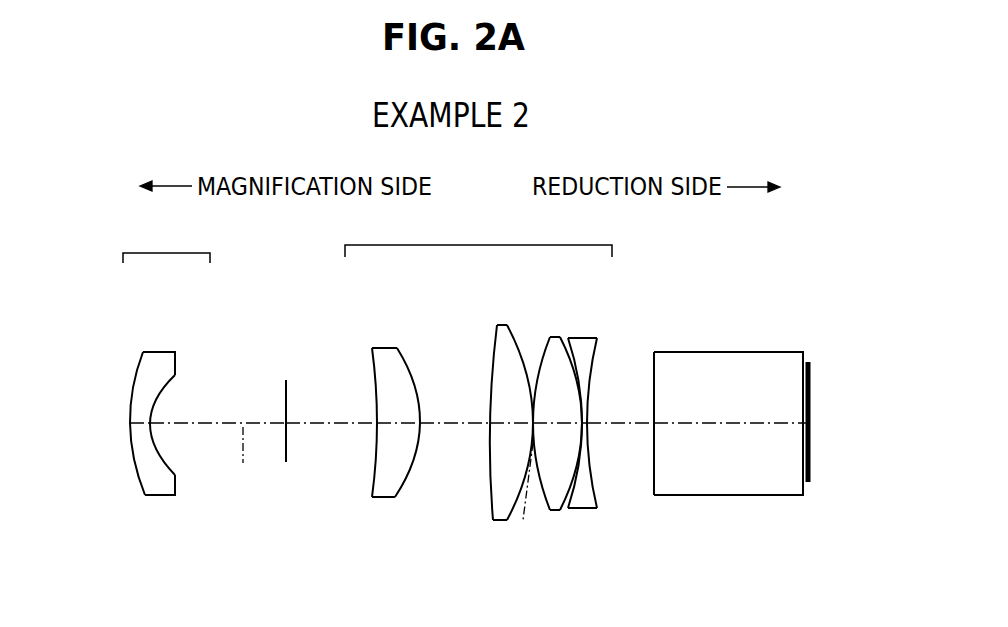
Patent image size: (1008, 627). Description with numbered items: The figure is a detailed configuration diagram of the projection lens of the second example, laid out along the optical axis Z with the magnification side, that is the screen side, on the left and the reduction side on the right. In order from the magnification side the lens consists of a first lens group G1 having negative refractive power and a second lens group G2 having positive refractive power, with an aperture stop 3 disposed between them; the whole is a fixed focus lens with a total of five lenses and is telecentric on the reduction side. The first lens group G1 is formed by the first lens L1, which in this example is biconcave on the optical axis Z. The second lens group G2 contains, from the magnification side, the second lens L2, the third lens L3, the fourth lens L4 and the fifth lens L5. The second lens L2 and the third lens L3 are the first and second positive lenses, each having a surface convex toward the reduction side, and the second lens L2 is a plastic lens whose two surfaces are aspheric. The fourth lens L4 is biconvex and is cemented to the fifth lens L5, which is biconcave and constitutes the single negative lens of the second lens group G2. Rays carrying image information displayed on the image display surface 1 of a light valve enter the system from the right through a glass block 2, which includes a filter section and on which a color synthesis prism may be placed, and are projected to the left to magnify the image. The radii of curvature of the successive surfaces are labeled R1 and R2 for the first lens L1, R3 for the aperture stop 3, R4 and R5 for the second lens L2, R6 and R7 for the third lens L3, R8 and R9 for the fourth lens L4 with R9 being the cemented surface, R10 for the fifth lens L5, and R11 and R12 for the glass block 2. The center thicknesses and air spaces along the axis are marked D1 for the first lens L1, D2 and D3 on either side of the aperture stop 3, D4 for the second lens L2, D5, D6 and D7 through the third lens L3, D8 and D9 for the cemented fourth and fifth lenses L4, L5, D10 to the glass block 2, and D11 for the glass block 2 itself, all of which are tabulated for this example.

The first lens group G1 is at (166, 240).
The second lens group G2 is at (478, 235).
The first lens L1 is at (147, 443).
The second lens L2 is at (400, 450).
The third lens L3 is at (481, 418).
The fourth lens L4 is at (559, 423).
The fifth lens L5 is at (610, 429).
The radius of curvature of first surface R1 is at (133, 417).
The radius of curvature of second surface R2 is at (152, 420).
The radius of curvature of stop surface R3 is at (286, 417).
The radius of curvature of fourth surface R4 is at (377, 420).
The radius of curvature of fifth surface R5 is at (420, 420).
The radius of curvature of sixth surface R6 is at (490, 383).
The radius of curvature of seventh surface R7 is at (522, 342).
The radius of curvature of eighth surface R8 is at (537, 355).
The radius of curvature of ninth surface R9 is at (565, 352).
The radius of curvature of tenth surface R10 is at (600, 362).
The radius of curvature of eleventh surface R11 is at (654, 422).
The radius of curvature of twelfth surface R12 is at (808, 360).
The center thickness of first lens D1 is at (122, 444).
The air space between first lens and stop D2 is at (218, 439).
The air space between stop and second lens D3 is at (331, 441).
The center thickness of second lens D4 is at (402, 428).
The air space between second and third lens D5 is at (455, 442).
The center thickness of third lens D6 is at (511, 442).
The air space between third and fourth lens D7 is at (528, 498).
The center thickness of fourth lens D8 is at (557, 442).
The center thickness of fifth lens D9 is at (595, 448).
The air space between fifth lens and glass block D10 is at (620, 442).
The thickness of glass block D11 is at (728, 442).
The optical axis Z is at (243, 462).
The aperture stop 3 is at (278, 438).
The glass block 2 is at (707, 451).
The image display surface 1 is at (833, 450).